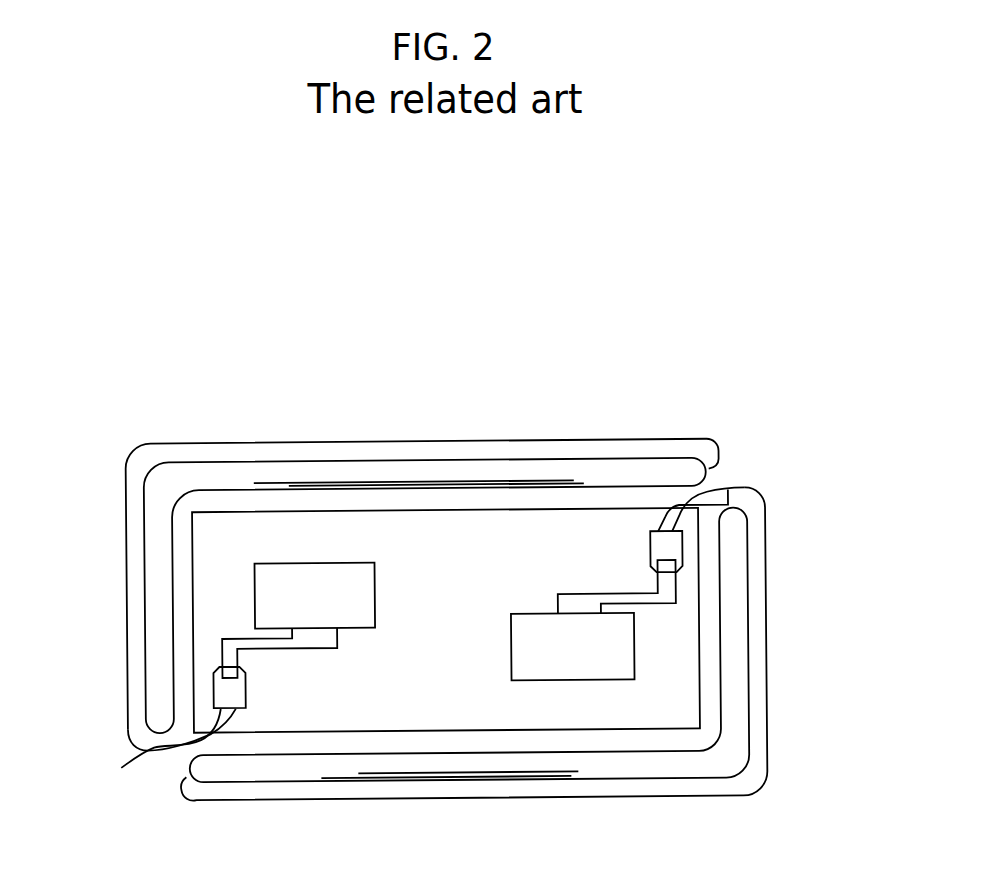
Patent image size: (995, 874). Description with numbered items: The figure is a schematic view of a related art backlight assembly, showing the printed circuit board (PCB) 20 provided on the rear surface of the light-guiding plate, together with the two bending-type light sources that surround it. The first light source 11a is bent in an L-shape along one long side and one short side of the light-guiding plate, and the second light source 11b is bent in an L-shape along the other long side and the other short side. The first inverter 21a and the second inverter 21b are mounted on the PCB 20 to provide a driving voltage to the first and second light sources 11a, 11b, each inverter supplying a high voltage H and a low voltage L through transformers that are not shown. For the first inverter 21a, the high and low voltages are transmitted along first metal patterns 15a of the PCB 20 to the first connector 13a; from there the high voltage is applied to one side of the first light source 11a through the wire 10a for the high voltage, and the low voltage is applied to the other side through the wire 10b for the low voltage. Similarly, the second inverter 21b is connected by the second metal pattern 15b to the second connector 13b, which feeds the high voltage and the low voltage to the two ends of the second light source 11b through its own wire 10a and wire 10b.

The wire for the high voltage 10a is at (728, 494).
The wire for the low voltage 10b is at (768, 511).
The first light source 11a is at (741, 662).
The second light source 11b is at (237, 476).
The first connector 13a is at (651, 541).
The second connector 13b is at (245, 696).
The first metal pattern 15a is at (658, 605).
The second metal pattern 15b is at (337, 635).
The printed circuit board 20 is at (500, 718).
The first inverter 21a is at (535, 614).
The second inverter 21b is at (375, 592).